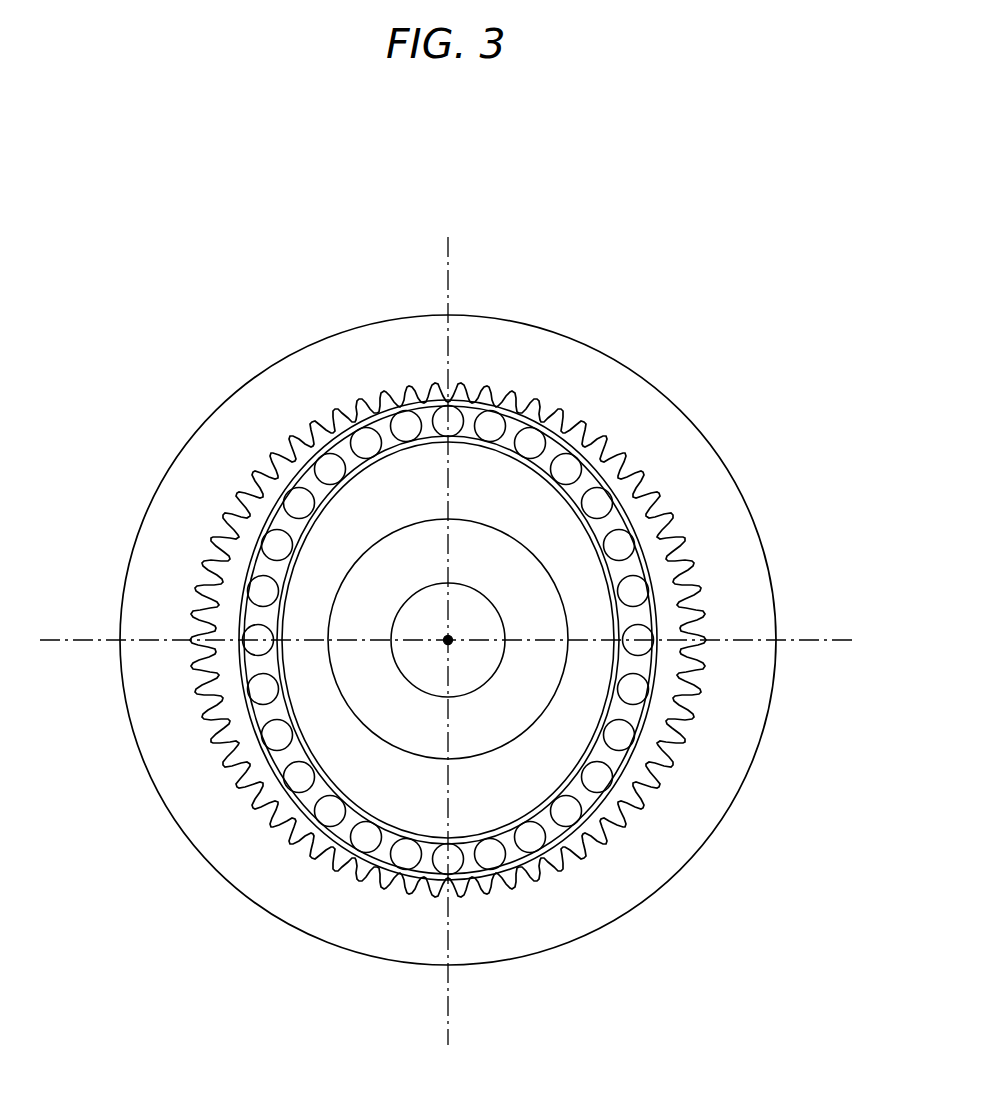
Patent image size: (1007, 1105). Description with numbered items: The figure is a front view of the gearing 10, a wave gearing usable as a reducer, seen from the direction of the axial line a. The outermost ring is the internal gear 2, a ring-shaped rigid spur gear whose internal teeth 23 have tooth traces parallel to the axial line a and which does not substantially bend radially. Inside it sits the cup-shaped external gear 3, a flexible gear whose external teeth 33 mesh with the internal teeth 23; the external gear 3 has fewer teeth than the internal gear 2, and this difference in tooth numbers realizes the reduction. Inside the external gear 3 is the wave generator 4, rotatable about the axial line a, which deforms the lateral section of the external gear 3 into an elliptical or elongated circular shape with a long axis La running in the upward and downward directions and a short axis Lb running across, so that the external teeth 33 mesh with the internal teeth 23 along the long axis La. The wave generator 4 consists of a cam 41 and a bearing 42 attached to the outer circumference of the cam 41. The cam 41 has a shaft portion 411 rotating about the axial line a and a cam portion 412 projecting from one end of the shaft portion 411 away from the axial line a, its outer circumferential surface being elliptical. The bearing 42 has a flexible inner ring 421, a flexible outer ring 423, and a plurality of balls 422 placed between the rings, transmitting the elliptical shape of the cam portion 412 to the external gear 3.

The gearing 10 is at (681, 176).
The internal gear 2 is at (651, 365).
The internal teeth 23 is at (690, 717).
The external gear 3 is at (499, 640).
The external teeth 33 is at (665, 750).
The wave generator 4 is at (368, 713).
The cam 41 is at (305, 691).
The shaft portion 411 is at (357, 720).
The cam portion 412 is at (365, 773).
The bearing 42 is at (466, 713).
The inner ring 421 is at (577, 853).
The balls 422 is at (535, 842).
The outer ring 423 is at (448, 721).
The axial line a is at (446, 638).
The long axis La is at (448, 277).
The short axis Lb is at (822, 643).